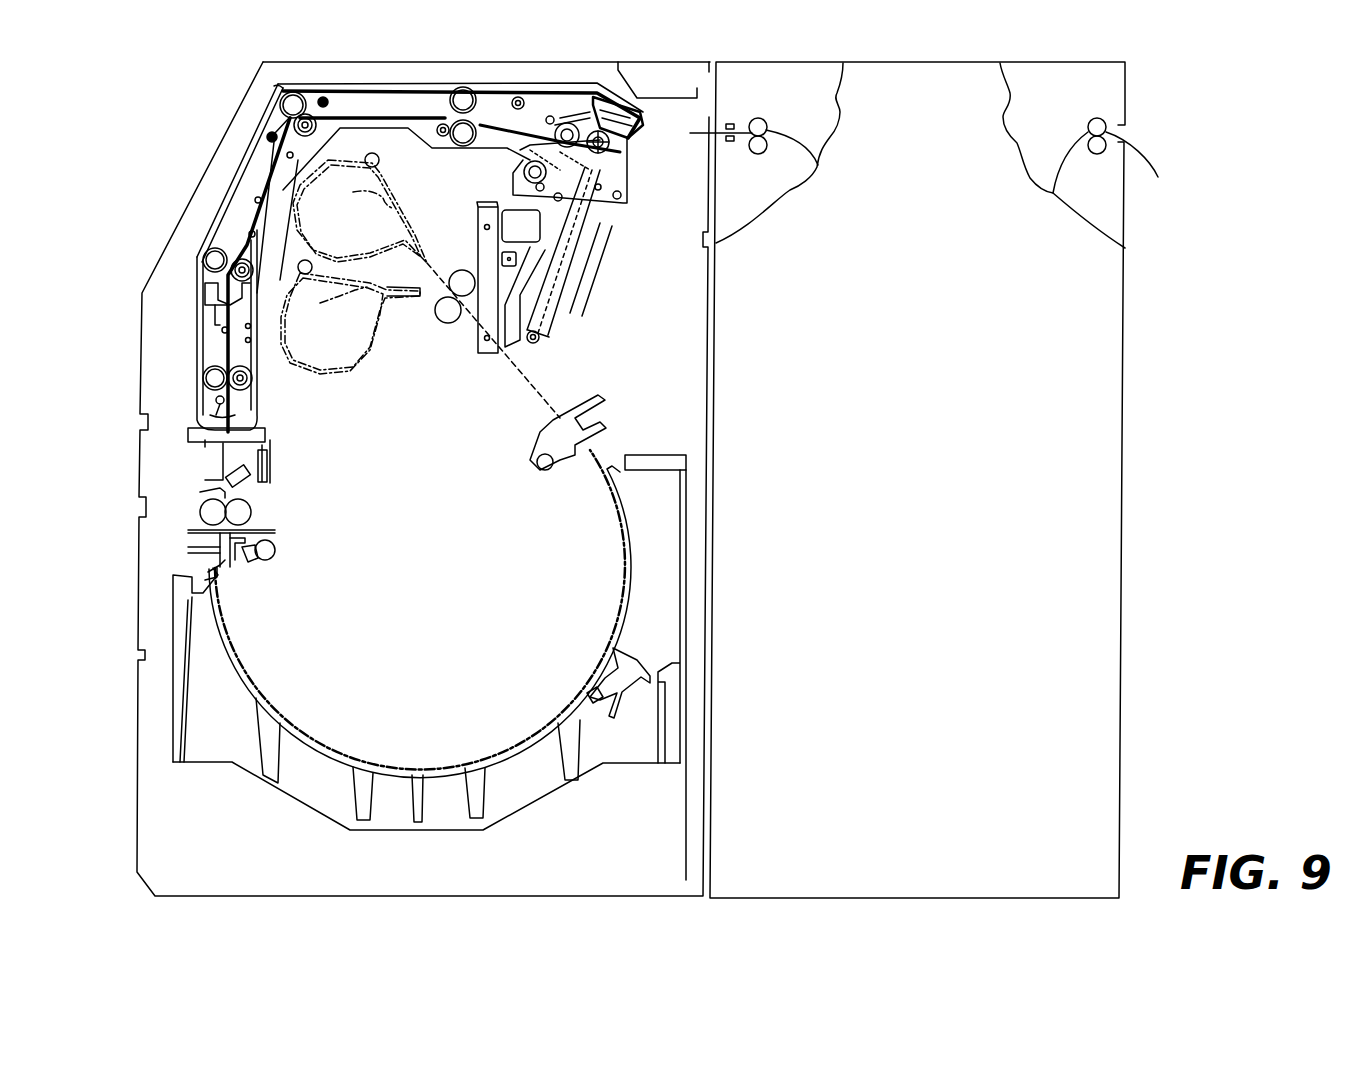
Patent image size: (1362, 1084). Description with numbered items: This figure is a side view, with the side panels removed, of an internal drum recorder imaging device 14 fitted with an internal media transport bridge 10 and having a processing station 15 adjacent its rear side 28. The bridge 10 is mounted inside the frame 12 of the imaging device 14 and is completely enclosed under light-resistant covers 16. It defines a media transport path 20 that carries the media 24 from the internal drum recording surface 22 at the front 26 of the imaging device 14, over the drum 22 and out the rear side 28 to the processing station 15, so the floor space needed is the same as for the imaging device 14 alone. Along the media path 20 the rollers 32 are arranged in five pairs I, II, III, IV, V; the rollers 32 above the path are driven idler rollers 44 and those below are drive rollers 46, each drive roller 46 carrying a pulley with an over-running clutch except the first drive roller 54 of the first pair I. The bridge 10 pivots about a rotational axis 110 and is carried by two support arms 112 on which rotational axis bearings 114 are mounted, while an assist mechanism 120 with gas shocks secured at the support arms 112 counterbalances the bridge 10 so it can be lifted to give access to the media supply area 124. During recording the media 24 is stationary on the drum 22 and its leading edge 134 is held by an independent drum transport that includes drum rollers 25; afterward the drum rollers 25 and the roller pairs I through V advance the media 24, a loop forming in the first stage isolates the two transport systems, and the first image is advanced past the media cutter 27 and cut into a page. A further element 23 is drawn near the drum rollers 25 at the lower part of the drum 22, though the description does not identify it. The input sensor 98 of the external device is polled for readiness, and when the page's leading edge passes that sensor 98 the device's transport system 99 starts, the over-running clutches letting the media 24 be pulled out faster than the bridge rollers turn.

The internal bridge 10 is at (393, 49).
The frame 12 is at (708, 305).
The imaging device 14 is at (212, 92).
The processing station 15 is at (921, 101).
The light-resistant covers 16 is at (222, 142).
The media transport path 20 is at (222, 322).
The drum 22 is at (240, 650).
The deflector 23 is at (236, 576).
The media 24 is at (240, 497).
The drum rollers 25 is at (448, 312).
The front 26 is at (140, 378).
The media cutter 27 is at (250, 474).
The rear side 28 is at (716, 107).
The rollers 32 is at (213, 258).
The driven idler rollers 44 is at (287, 92).
The drive rollers 46 is at (460, 140).
The first drive roller 54 is at (240, 378).
The input sensor 98 is at (731, 123).
The transport system 99 is at (760, 118).
The rotational axis 110 is at (520, 98).
The support arms 112 is at (480, 210).
The rotational axis bearings 114 is at (540, 160).
The assist mechanism 120 is at (640, 155).
The media supply area 124 is at (402, 329).
The leading edge 134 is at (200, 492).
The first pair of rollers I is at (205, 377).
The second stage roller pair II is at (205, 262).
The second stage roller pair III is at (275, 110).
The second stage roller pair IV is at (468, 100).
The second stage roller pair V is at (628, 145).